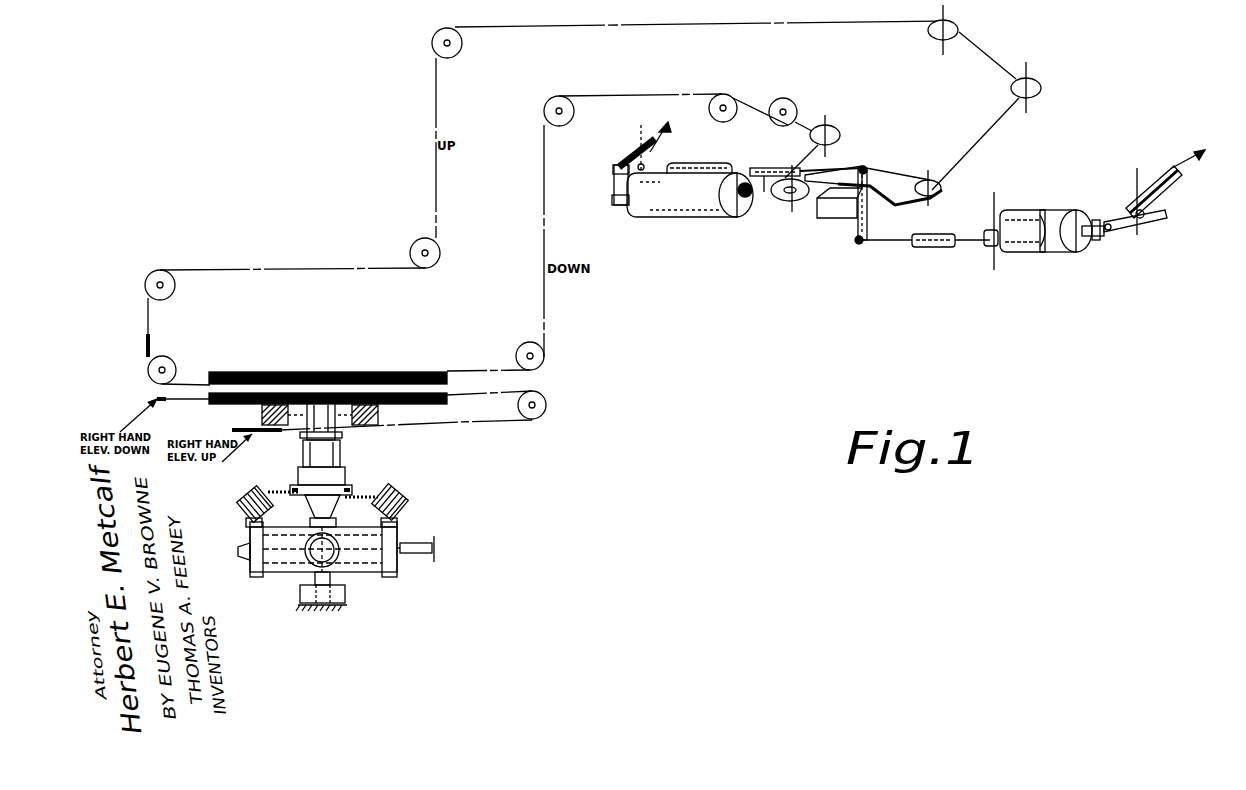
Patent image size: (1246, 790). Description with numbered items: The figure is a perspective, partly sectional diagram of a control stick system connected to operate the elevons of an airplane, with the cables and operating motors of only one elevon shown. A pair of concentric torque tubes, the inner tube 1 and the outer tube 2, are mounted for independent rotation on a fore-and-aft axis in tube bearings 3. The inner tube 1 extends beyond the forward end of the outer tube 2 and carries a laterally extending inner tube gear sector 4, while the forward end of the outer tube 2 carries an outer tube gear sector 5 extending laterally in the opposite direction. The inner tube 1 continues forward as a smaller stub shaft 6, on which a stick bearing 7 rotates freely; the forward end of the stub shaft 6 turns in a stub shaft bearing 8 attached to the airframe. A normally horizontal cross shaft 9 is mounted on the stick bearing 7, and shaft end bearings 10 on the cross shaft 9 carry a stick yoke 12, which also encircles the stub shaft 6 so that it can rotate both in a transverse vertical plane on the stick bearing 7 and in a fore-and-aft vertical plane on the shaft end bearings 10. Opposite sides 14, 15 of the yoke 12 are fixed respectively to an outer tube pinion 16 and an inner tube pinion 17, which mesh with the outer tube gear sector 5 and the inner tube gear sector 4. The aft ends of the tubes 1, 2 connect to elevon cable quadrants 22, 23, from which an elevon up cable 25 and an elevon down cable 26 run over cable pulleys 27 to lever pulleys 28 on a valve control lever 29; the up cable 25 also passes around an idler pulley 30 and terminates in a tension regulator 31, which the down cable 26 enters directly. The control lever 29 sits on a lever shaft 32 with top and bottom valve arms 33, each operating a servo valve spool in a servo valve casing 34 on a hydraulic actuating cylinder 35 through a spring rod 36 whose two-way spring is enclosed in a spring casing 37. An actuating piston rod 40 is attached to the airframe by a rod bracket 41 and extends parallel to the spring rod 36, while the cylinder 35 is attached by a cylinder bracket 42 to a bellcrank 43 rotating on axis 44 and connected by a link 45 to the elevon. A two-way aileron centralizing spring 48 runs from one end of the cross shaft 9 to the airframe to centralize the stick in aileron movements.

The inner torque tube 1 is at (342, 437).
The outer torque tube 2 is at (342, 460).
The tube bearings 3 is at (262, 416).
The inner tube gear sector 4 is at (392, 496).
The outer tube gear sector 5 is at (262, 496).
The stub shaft 6 is at (310, 588).
The stick bearing 7 is at (355, 574).
The stub shaft bearing 8 is at (335, 594).
The cross shaft 9 is at (345, 568).
The shaft end bearings 10 is at (255, 577).
The stick yoke 12 is at (278, 574).
The side of yoke 14 is at (238, 549).
The side of yoke 15 is at (400, 562).
The outer tube pinion 16 is at (243, 506).
The inner tube pinion 17 is at (405, 500).
The elevon cable quadrant 22 is at (350, 372).
The elevon cable quadrant 23 is at (395, 404).
The elevon up cable 25 is at (150, 344).
The elevon down cable 26 is at (150, 401).
The cable pulleys 27 is at (432, 50).
The lever pulleys 28 is at (792, 202).
The valve control lever 29 is at (812, 174).
The idler pulley 30 is at (840, 172).
The tension regulator 31 is at (835, 220).
The lever shaft 32 is at (856, 242).
The valve arms 33 is at (893, 178).
The servo valve casing 34 is at (698, 166).
The hydraulic actuating cylinder 35 is at (1056, 210).
The spring rod 36 is at (762, 168).
The spring casing 37 is at (766, 192).
The actuating piston rod 40 is at (742, 200).
The rod bracket 41 is at (978, 231).
The cylinder bracket 42 is at (614, 203).
The bellcrank 43 is at (612, 184).
The axis 44 is at (648, 165).
The link 45 is at (660, 145).
The aileron centralizing spring 48 is at (435, 546).